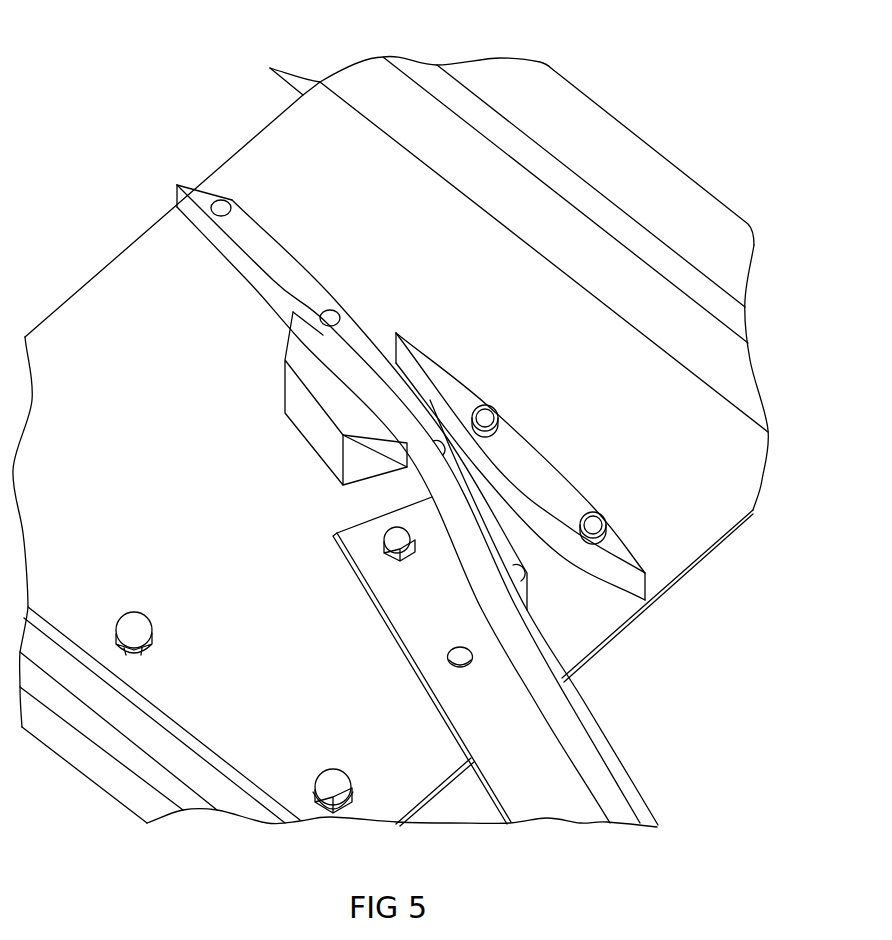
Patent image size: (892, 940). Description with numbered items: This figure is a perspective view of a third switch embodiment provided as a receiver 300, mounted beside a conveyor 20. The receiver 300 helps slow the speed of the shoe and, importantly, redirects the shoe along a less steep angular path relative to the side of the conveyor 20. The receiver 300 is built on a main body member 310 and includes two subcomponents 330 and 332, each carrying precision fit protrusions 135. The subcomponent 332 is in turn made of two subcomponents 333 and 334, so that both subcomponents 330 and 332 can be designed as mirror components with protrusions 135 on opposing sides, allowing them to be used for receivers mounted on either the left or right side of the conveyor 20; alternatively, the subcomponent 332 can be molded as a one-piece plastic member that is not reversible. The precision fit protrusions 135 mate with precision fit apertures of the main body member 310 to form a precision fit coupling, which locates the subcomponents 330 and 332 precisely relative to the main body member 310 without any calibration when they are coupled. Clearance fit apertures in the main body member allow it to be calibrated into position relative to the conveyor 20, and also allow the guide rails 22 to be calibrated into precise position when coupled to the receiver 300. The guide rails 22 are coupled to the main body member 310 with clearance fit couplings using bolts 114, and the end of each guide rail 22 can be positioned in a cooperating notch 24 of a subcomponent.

The receiver 300 is at (192, 99).
The conveyor 20 is at (596, 126).
The main body member 310 is at (83, 312).
The subcomponent 333 is at (227, 227).
The subcomponent 332 is at (262, 327).
The subcomponent 334 is at (300, 421).
The cooperating notch 24 is at (407, 443).
The bolt 114 is at (397, 540).
The precision fit protrusion 135 is at (483, 407).
The subcomponent 330 is at (535, 468).
The guide rail 22 is at (603, 748).